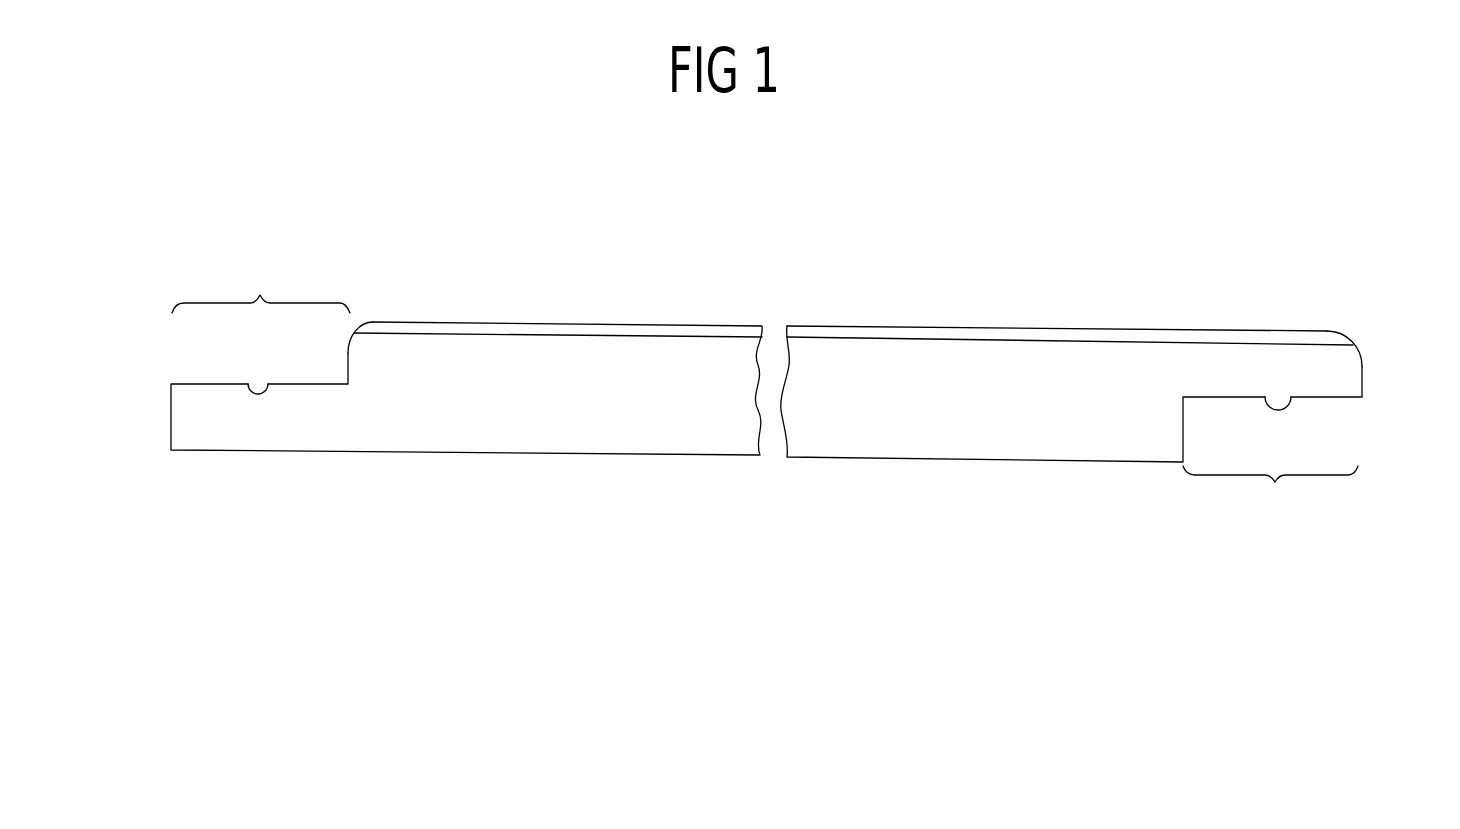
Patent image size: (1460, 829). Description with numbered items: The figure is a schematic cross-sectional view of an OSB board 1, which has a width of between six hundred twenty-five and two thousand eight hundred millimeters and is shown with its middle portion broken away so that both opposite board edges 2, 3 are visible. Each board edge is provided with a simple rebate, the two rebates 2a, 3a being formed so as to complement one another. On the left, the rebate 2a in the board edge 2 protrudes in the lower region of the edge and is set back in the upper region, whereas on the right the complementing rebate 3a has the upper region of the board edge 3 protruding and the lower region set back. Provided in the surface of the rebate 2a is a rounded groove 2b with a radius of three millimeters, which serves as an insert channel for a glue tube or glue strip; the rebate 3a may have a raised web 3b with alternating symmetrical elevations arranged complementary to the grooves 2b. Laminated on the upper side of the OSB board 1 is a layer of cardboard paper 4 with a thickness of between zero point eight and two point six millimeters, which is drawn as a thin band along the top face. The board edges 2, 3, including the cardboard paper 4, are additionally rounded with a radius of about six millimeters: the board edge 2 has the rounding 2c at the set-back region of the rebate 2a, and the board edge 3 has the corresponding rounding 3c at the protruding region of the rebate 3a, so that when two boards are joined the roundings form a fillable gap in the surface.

The OSB board 1 is at (326, 214).
The board edge 2 is at (170, 413).
The rebate 2a is at (261, 287).
The rounded groove 2b is at (261, 386).
The rounding 2c is at (358, 335).
The board edge 3 is at (1364, 378).
The rebate 3a is at (1270, 495).
The raised web 3b is at (1278, 410).
The rounding 3c is at (1345, 342).
The cardboard paper 4 is at (942, 327).